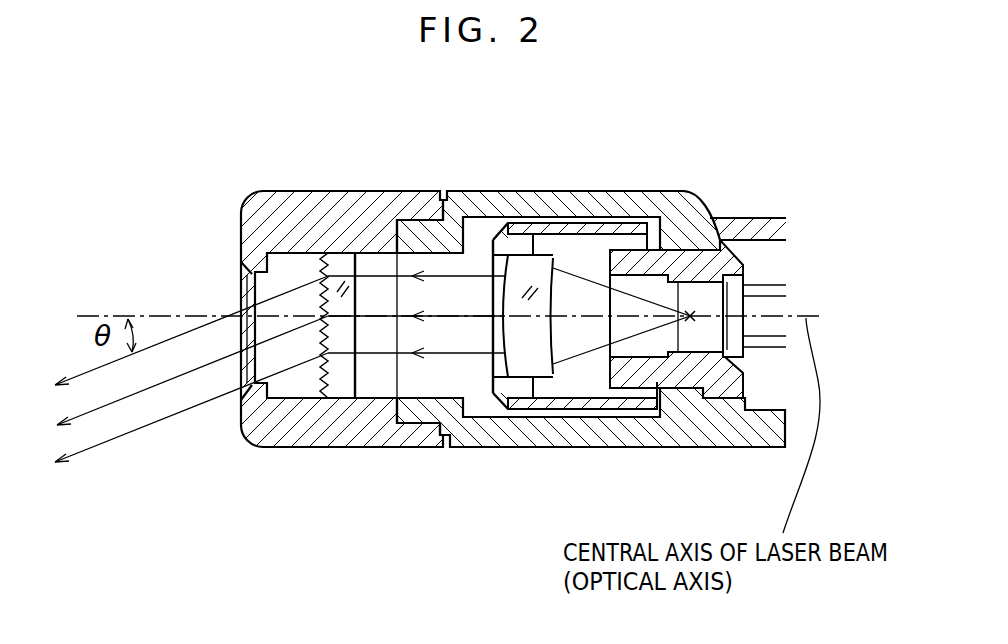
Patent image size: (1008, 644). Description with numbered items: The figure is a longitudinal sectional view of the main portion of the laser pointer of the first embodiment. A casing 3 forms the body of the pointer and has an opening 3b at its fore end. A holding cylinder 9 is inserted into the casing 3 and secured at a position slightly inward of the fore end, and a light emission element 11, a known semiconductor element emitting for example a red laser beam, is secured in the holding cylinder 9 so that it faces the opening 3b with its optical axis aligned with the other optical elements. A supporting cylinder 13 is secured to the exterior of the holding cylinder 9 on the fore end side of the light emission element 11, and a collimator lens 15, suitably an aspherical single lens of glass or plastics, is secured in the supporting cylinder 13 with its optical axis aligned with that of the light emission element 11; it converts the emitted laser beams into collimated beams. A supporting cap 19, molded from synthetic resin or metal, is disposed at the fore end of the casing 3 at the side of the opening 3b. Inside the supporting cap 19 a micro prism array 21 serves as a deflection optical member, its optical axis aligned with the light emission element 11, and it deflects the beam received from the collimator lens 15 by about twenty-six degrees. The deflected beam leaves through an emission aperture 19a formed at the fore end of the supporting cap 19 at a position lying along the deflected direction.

The supporting cap 19 is at (278, 191).
The emission aperture 19a is at (257, 288).
The casing 3 is at (525, 200).
The opening 3b is at (397, 257).
The holding cylinder 9 is at (730, 378).
The light emission element 11 is at (712, 285).
The supporting cylinder 13 is at (615, 228).
The collimator lens 15 is at (515, 330).
The micro prism array 21 is at (362, 382).